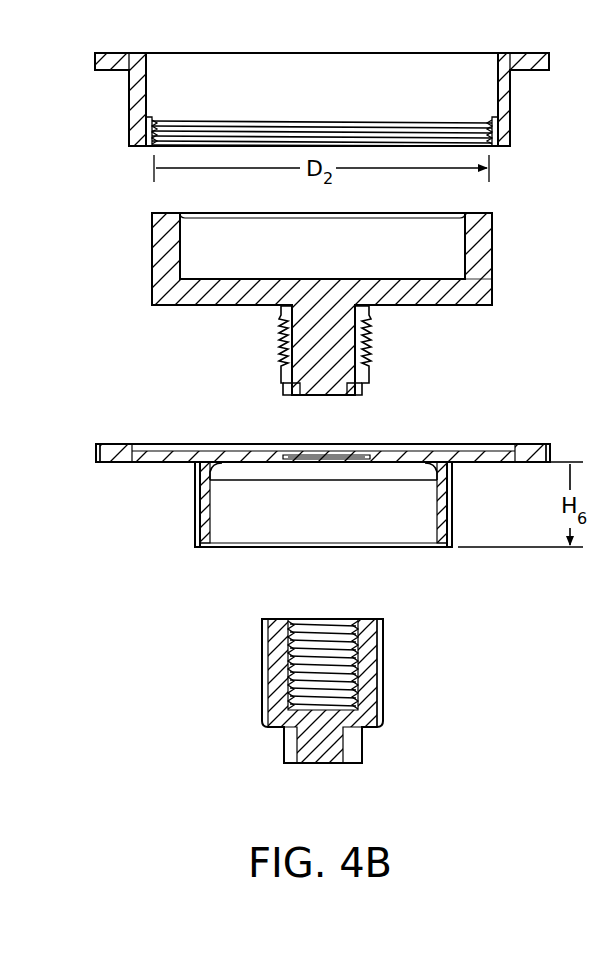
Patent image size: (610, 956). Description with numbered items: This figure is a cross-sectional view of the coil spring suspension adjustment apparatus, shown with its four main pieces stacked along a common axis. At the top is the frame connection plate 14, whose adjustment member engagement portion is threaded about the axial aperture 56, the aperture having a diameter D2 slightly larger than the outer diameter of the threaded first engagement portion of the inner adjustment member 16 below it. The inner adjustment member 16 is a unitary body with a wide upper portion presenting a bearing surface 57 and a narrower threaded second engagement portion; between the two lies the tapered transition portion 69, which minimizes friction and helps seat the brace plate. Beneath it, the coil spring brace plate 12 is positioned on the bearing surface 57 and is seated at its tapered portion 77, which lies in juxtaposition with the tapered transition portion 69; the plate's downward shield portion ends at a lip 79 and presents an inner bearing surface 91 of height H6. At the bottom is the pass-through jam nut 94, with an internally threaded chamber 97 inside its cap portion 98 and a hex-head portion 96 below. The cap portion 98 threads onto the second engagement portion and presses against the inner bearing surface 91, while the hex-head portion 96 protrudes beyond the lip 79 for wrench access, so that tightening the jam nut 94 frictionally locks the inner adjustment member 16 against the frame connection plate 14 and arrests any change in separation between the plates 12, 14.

The coil spring brace plate 12 is at (172, 465).
The frame connection plate 14 is at (122, 73).
The inner adjustment member 16 is at (150, 257).
The axial aperture 56 is at (418, 145).
The bearing surface 57 is at (428, 306).
The transition portion 69 is at (280, 310).
The tapered portion 77 is at (280, 455).
The lip 79 is at (445, 547).
The inner bearing surface 91 is at (388, 463).
The pass-through jam nut 94 is at (256, 686).
The hex-head portion 96 is at (355, 745).
The chamber 97 is at (340, 635).
The cap portion 98 is at (385, 665).